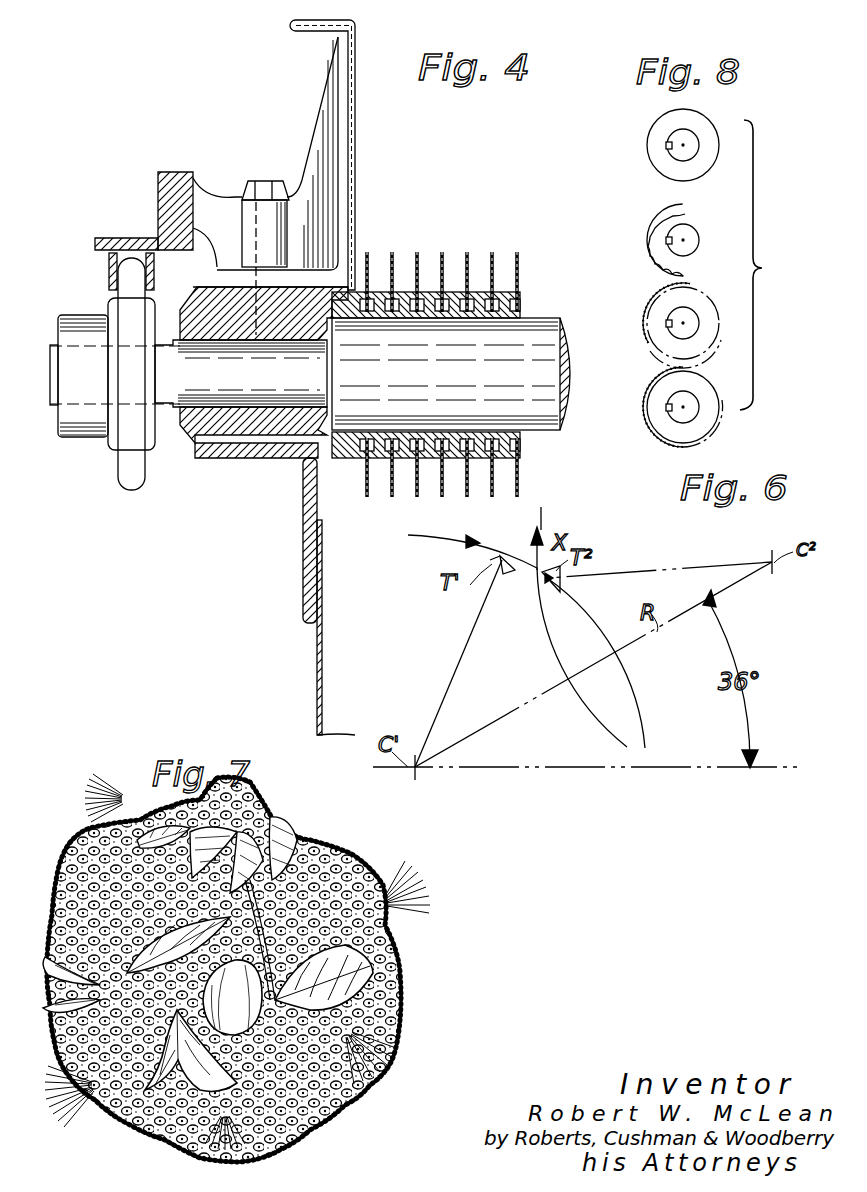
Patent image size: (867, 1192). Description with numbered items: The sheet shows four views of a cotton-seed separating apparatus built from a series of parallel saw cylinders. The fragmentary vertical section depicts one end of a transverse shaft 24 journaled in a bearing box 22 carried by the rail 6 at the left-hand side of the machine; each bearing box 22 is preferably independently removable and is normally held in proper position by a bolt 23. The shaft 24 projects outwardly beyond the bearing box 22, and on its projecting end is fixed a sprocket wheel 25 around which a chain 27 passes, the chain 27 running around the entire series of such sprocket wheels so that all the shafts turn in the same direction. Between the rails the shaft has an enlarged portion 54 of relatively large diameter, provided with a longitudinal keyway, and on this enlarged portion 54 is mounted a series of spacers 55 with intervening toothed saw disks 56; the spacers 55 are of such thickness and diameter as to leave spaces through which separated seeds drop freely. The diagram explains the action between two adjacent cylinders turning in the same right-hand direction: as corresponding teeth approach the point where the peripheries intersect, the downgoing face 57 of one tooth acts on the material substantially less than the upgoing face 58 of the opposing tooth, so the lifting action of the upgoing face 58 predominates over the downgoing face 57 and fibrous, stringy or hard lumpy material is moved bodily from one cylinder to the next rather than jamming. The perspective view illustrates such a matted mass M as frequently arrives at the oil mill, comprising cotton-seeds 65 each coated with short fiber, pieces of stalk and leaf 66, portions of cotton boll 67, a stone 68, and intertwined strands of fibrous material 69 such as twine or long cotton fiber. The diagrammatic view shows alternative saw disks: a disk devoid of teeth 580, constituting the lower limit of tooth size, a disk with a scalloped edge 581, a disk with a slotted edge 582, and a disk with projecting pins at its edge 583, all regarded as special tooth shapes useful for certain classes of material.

In FIG. 4, the rail 6 is at (305, 503).
In FIG. 4, the bearing box 22 is at (196, 440).
In FIG. 4, the bolt 23 is at (268, 183).
In FIG. 4, the shaft 24 is at (188, 373).
In FIG. 4, the sprocket wheel 25 is at (130, 476).
In FIG. 4, the chain 27 is at (102, 351).
In FIG. 4, the enlarged shaft portion 54 is at (540, 320).
In FIG. 4, the spacer 55 is at (497, 292).
In FIG. 4, the toothed saw disk 56 is at (520, 270).
In FIG. 6, the downgoing face of tooth 57 is at (518, 555).
In FIG. 6, the upgoing face of tooth 58 is at (567, 652).
In FIG. 8, the toothless saw disk 580 is at (650, 142).
In FIG. 8, the scalloped-edge disk 581 is at (655, 222).
In FIG. 8, the slotted-edge disk 582 is at (650, 312).
In FIG. 8, the pinned-edge disk 583 is at (655, 395).
In FIG. 7, the matted mass M is at (385, 868).
In FIG. 7, the cotton-seeds 65 is at (388, 905).
In FIG. 7, the pieces of stalk and leaf 66 is at (324, 977).
In FIG. 7, the portions of cotton boll 67 is at (191, 1056).
In FIG. 7, the stone 68 is at (232, 997).
In FIG. 7, the strands of fibrous material 69 is at (92, 808).